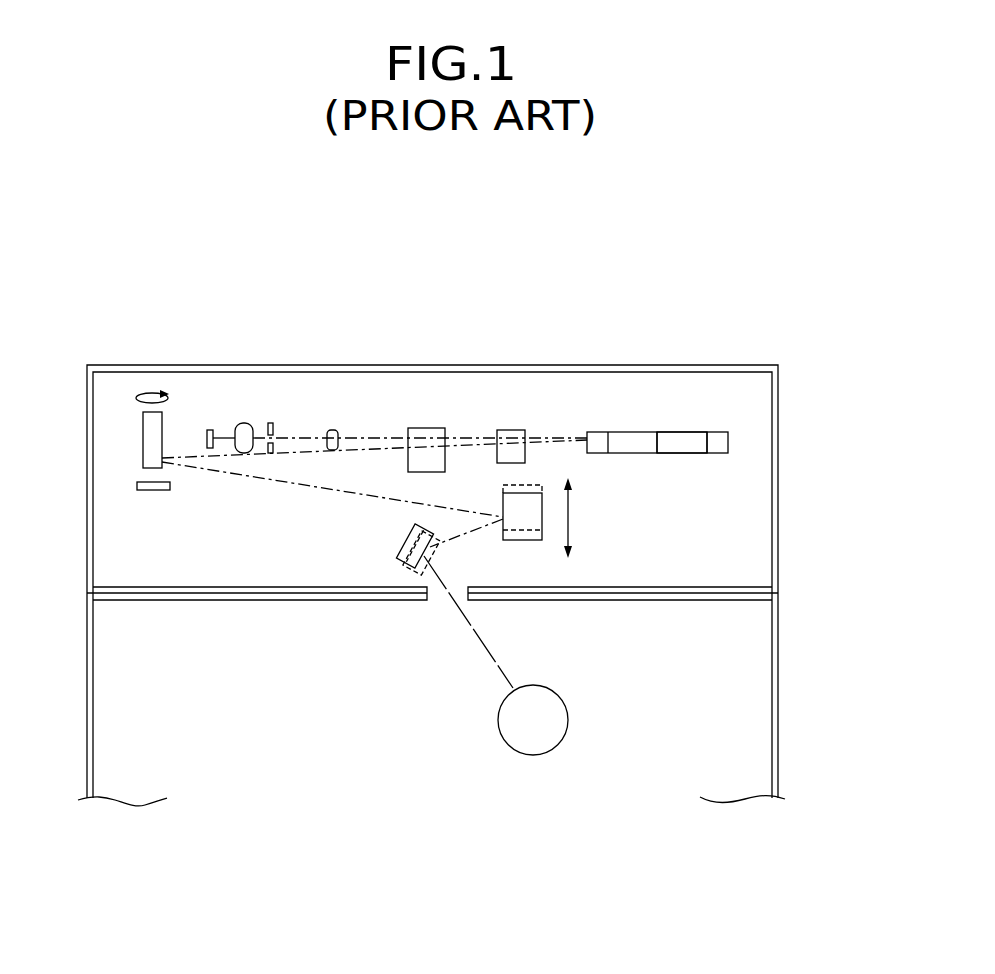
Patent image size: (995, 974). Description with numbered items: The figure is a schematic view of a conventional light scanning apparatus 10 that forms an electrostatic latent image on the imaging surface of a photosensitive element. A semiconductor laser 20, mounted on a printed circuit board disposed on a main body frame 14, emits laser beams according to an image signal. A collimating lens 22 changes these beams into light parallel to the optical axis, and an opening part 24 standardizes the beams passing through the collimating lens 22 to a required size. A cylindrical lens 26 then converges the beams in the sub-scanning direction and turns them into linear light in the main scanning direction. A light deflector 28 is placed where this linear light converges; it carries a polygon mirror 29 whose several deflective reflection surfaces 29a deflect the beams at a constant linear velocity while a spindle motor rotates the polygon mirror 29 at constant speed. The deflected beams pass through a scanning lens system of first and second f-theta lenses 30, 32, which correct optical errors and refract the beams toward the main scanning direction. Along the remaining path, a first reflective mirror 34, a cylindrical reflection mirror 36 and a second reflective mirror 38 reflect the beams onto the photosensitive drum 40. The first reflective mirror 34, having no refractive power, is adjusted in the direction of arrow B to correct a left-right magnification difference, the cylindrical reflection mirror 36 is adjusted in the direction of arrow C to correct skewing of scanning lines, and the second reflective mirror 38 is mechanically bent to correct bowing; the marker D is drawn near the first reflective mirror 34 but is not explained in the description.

The light scanning apparatus 10 is at (668, 308).
The main body frame 14 is at (778, 703).
The semiconductor laser 20 is at (210, 430).
The collimating lens 22 is at (243, 423).
The opening part 24 is at (270, 423).
The cylindrical lens 26 is at (331, 430).
The light deflector 28 is at (680, 413).
The polygon mirror 29 is at (615, 432).
The deflective reflection surfaces 29a is at (685, 453).
The first f-theta lens 30 is at (503, 430).
The second f-theta lens 32 is at (423, 428).
The first reflective mirror 34 is at (143, 435).
The cylindrical reflection mirror 36 is at (518, 540).
The second reflective mirror 38 is at (408, 534).
The photosensitive drum 40 is at (560, 697).
The arrow B is at (148, 392).
The arrow C is at (568, 520).
The support plate D is at (153, 490).